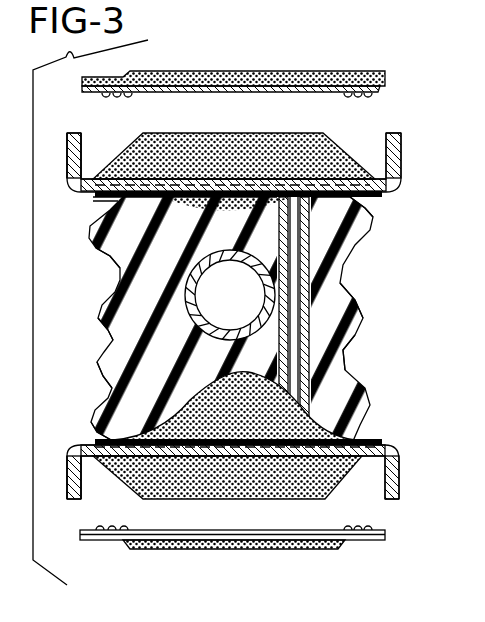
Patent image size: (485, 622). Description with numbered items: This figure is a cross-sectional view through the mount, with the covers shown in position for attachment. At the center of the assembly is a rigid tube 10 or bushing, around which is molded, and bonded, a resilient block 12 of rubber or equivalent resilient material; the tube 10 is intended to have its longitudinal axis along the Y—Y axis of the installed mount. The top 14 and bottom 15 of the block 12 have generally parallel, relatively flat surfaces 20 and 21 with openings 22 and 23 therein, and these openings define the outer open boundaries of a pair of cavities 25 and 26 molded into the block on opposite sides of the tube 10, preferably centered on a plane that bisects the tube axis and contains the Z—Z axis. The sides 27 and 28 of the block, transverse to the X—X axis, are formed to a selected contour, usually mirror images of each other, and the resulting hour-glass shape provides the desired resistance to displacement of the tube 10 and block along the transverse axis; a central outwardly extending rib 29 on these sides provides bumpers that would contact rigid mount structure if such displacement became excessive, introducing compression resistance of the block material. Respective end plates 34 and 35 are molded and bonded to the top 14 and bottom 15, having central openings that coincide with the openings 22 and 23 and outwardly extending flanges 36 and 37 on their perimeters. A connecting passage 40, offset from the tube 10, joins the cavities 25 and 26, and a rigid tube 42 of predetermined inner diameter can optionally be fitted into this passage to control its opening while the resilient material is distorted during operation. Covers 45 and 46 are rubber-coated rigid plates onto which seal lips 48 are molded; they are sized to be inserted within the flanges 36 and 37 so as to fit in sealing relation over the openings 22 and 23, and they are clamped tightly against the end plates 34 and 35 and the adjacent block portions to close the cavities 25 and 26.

The tube 10 is at (186, 304).
The resilient block 12 is at (134, 265).
The top of the block 14 is at (128, 226).
The bottom of the block 15 is at (112, 405).
The flat surface 20 is at (118, 200).
The flat surface 21 is at (112, 434).
The opening 22 is at (160, 180).
The opening 23 is at (157, 450).
The cavity 25 is at (222, 208).
The cavity 26 is at (213, 446).
The side of the block 27 is at (108, 343).
The side of the block 28 is at (350, 292).
The central outwardly extending rib 29 is at (355, 335).
The end plate 34 is at (92, 178).
The end plate 35 is at (120, 457).
The flange 36 is at (70, 149).
The flange 37 is at (385, 466).
The connecting passage 40 is at (352, 202).
The rigid tube 42 is at (304, 275).
The cover 45 is at (305, 70).
The cover 46 is at (278, 552).
The seal lips 48 is at (370, 104).